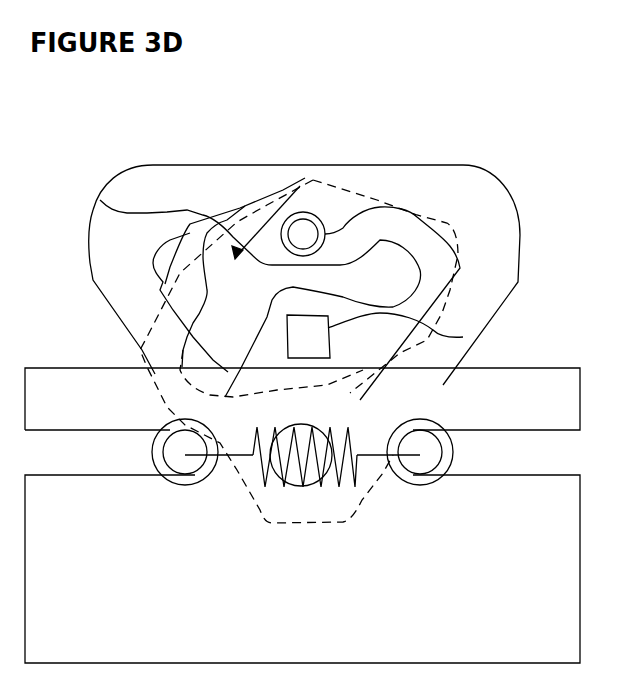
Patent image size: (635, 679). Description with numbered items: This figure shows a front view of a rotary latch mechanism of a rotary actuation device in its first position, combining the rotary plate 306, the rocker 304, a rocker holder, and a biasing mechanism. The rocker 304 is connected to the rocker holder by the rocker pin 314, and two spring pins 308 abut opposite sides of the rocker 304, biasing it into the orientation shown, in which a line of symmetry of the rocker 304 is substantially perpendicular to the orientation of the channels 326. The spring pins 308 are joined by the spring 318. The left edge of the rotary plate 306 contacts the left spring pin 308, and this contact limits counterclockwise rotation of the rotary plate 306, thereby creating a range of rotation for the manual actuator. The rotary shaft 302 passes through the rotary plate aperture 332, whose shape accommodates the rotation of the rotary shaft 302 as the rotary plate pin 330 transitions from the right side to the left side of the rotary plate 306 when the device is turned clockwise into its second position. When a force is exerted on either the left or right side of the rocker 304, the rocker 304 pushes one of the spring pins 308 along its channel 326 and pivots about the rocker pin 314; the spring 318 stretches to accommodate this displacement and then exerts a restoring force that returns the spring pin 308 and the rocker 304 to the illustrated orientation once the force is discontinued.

The rotary shaft 302 is at (463, 337).
The rocker 304 is at (187, 165).
The rotary plate 306 is at (368, 200).
The spring pins 308 is at (195, 486).
The rocker pin 314 is at (300, 522).
The spring 318 is at (343, 522).
The channels 326 is at (77, 470).
The rotary plate pin 330 is at (303, 212).
The rotary plate aperture 332 is at (100, 200).